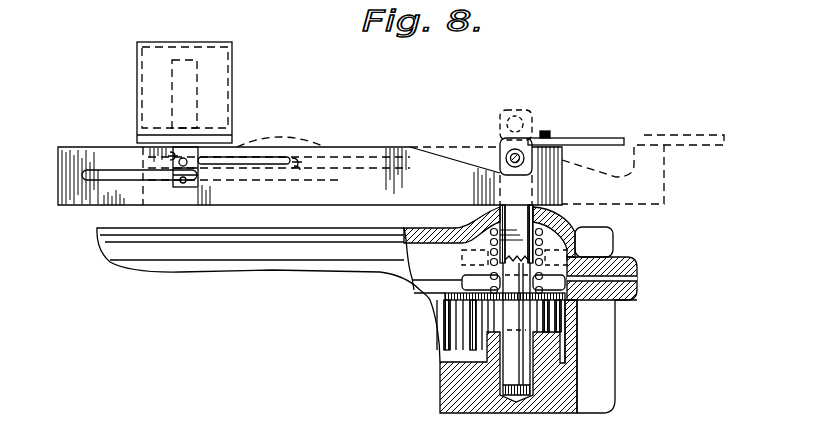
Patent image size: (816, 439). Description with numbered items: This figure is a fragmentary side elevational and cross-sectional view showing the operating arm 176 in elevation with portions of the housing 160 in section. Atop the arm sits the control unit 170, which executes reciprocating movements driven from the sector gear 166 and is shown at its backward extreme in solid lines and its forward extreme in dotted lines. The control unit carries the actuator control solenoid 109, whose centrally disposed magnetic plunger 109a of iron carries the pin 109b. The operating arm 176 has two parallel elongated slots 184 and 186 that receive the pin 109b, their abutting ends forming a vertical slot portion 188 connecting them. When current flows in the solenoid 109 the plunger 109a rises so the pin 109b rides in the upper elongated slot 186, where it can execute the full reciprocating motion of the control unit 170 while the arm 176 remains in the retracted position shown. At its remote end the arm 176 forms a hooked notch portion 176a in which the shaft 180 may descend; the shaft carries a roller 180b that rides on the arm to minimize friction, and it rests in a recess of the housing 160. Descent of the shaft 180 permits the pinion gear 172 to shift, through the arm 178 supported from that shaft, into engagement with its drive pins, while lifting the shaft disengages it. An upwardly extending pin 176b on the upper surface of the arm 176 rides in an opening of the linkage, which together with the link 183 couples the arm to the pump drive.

The control unit 170 is at (156, 40).
The actuator control solenoid 109 is at (137, 83).
The magnetic plunger 109a is at (192, 98).
The pin 109b is at (182, 183).
The operating arm 176 is at (58, 172).
The hooked notch portion 176a is at (448, 151).
The upwardly extending pin 176b is at (549, 136).
The operating arm 178 is at (472, 298).
The shaft 180 is at (514, 142).
The roller 180b is at (500, 157).
The link 183 is at (600, 136).
The elongated slot 184 is at (92, 180).
The upper elongated slot 186 is at (253, 165).
The vertical slot portion 188 is at (170, 160).
The housing 160 is at (605, 238).
The sector gear 166 is at (438, 320).
The pinion gear 172 is at (456, 335).